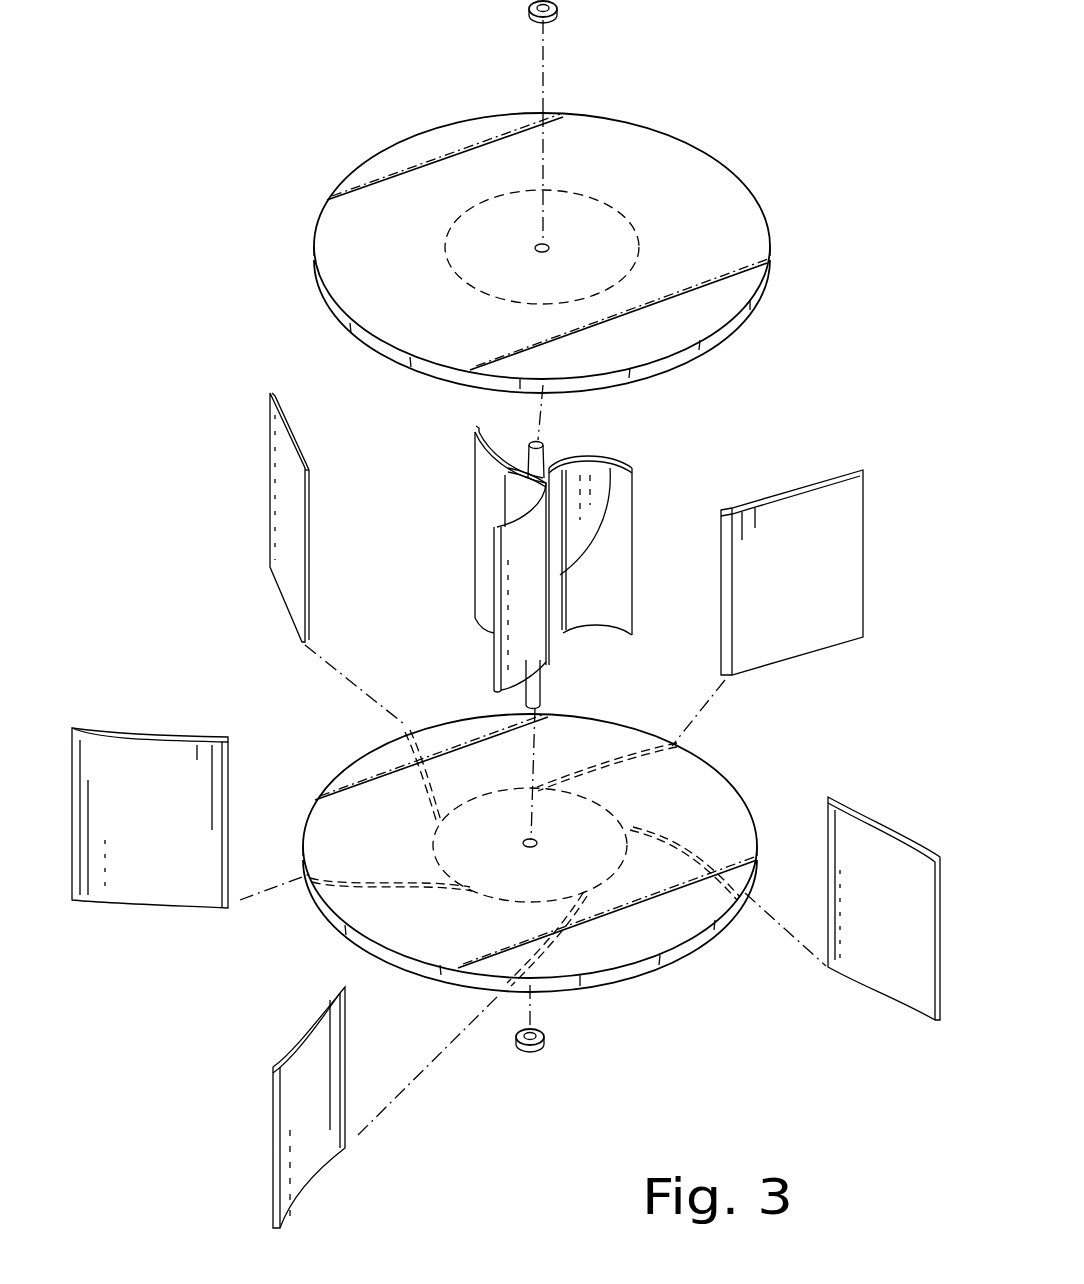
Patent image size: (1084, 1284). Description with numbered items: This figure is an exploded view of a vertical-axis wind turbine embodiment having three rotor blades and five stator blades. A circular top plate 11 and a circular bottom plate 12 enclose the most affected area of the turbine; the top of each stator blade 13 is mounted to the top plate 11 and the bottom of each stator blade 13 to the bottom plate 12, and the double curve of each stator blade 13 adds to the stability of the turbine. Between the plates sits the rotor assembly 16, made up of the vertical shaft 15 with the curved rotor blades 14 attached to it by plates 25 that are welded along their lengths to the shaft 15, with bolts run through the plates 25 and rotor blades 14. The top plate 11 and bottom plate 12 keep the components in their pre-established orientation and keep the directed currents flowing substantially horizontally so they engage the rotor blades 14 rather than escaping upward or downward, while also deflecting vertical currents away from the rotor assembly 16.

The top plate 11 is at (710, 173).
The bottom plate 12 is at (683, 955).
The stator blade 13 is at (270, 487).
The rotor blade 14 is at (473, 517).
The vertical shaft 15 is at (542, 691).
The rotor assembly 16 is at (437, 562).
The plate 25 is at (520, 462).